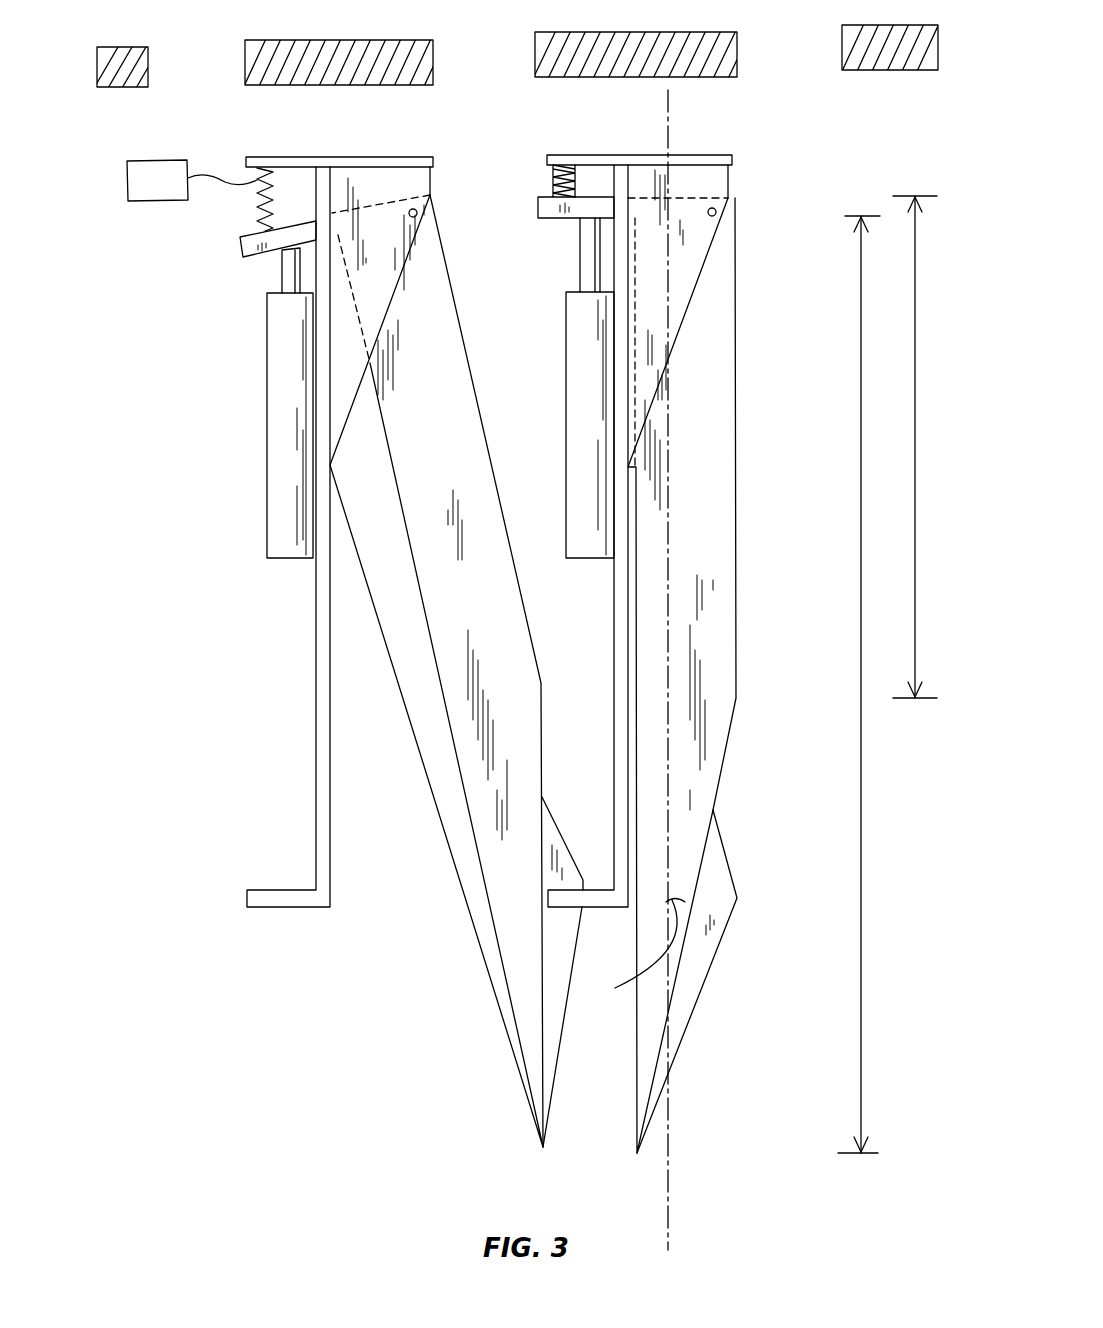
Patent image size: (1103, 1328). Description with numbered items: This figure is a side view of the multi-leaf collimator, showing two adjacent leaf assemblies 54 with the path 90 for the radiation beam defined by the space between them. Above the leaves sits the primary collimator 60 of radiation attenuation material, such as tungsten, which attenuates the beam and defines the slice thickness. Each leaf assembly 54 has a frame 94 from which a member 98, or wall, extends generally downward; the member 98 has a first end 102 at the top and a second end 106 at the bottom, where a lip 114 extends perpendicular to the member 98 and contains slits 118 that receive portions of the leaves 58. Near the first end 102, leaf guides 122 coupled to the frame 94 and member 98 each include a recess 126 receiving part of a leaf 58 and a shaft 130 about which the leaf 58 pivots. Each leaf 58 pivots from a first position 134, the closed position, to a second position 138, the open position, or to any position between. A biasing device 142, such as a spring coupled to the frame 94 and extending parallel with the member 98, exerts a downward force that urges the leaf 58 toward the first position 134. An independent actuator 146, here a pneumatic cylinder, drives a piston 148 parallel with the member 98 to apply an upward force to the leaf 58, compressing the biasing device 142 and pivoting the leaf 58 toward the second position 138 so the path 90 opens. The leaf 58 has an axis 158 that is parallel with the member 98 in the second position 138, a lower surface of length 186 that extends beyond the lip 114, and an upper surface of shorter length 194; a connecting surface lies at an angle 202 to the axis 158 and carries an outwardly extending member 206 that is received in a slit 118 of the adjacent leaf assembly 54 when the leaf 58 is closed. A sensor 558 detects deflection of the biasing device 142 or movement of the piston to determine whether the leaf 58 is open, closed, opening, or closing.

The leaf assembly 54 is at (703, 118).
The leaf 58 is at (442, 710).
The primary collimator / radiation attenuation material 60 is at (250, 43).
The path 90 is at (490, 163).
The frame 94 is at (328, 157).
The member 98 is at (318, 708).
The first end 102 is at (214, 198).
The second end 106 is at (186, 920).
The lip 114 is at (281, 904).
The slit 118 is at (589, 913).
The leaf guide 122 is at (432, 184).
The recess 126 is at (357, 428).
The shaft 130 is at (417, 216).
The first position 134 is at (547, 1160).
The second position 138 is at (683, 1157).
The biasing device 142 is at (257, 217).
The actuator 146 is at (272, 418).
The piston 148 is at (282, 281).
The axis 158 is at (670, 1122).
The length of lower surface 186 is at (860, 968).
The length of upper surface 194 is at (913, 462).
The angle 202 is at (637, 961).
The member 206 is at (730, 870).
The sensor 558 is at (127, 183).